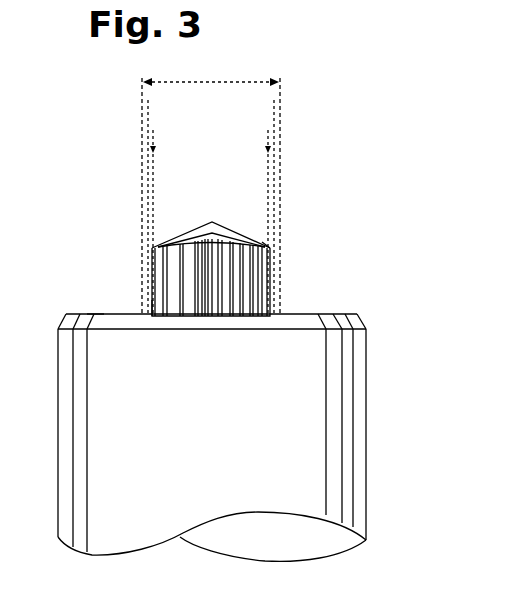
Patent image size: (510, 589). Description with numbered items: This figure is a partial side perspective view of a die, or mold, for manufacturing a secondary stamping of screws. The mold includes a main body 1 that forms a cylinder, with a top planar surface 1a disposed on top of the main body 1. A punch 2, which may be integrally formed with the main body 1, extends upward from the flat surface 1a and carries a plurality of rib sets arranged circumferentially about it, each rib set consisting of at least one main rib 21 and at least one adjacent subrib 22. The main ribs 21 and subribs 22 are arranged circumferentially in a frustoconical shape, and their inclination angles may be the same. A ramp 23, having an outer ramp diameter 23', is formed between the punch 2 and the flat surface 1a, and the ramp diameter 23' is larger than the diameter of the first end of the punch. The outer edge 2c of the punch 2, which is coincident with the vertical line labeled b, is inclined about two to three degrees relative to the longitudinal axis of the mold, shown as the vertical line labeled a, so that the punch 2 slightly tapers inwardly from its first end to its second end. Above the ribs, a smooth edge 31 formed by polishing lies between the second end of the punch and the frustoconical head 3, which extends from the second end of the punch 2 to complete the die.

The main body 1 is at (80, 391).
The top planar surface 1a is at (103, 313).
The punch 2 is at (146, 258).
The outer edge 2c is at (282, 283).
The frustoconical head 3 is at (200, 223).
The main rib 21 is at (247, 278).
The subrib 22 is at (218, 243).
The ramp 23 is at (131, 291).
The outer ramp diameter 23' is at (210, 197).
The smooth edge 31 is at (262, 242).